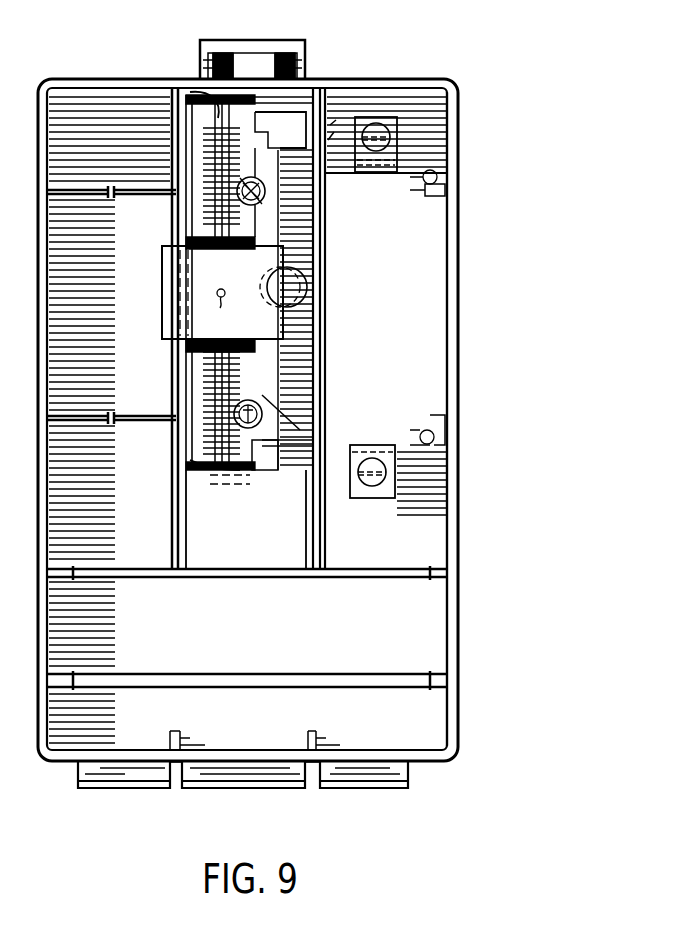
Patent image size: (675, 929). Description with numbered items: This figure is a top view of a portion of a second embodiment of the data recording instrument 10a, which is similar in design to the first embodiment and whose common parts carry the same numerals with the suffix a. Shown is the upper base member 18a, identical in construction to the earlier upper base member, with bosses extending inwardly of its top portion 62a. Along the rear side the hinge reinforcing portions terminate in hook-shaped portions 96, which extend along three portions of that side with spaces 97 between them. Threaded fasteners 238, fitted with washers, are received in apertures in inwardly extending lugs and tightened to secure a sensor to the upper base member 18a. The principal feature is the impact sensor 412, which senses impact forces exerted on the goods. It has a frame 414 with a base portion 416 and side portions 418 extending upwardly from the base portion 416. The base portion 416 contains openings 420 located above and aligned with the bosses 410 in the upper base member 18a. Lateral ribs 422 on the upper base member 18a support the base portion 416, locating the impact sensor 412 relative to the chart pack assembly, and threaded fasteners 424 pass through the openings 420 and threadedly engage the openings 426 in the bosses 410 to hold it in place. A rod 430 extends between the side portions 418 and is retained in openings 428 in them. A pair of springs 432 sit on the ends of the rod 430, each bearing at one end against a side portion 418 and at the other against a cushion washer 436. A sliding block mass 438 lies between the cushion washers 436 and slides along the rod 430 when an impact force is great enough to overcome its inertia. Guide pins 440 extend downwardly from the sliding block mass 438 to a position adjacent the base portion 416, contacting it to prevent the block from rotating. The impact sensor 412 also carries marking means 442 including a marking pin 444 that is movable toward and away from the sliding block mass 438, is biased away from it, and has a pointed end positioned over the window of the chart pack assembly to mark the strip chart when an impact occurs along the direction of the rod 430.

The data recording instrument 10a is at (518, 96).
The upper base member 18a is at (459, 250).
The top portion 62a is at (422, 470).
The threaded fastener 238 is at (392, 122).
The boss 410 is at (320, 222).
The impact sensor 412 is at (248, 134).
The frame 414 is at (296, 440).
The base portion 416 is at (296, 352).
The side portion 418 is at (232, 108).
The opening 420 is at (320, 248).
The lateral rib 422 is at (300, 432).
The threaded fastener 424 is at (265, 184).
The opening 426 is at (330, 130).
The opening 428 is at (190, 98).
The rod 430 is at (212, 437).
The spring 432 is at (200, 133).
The cushion washer 436 is at (200, 240).
The sliding block mass 438 is at (163, 322).
The guide pin 440 is at (164, 286).
The marking means 442 is at (220, 309).
The marking pin 444 is at (223, 289).
The hook-shaped portion 96 is at (80, 789).
The space 97 is at (176, 788).